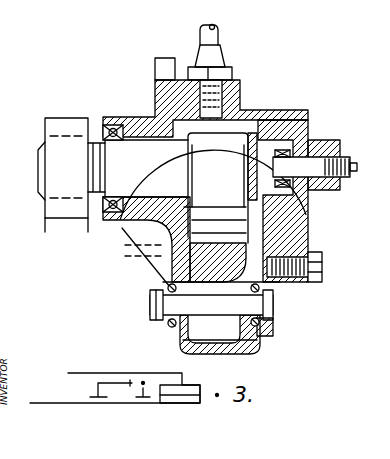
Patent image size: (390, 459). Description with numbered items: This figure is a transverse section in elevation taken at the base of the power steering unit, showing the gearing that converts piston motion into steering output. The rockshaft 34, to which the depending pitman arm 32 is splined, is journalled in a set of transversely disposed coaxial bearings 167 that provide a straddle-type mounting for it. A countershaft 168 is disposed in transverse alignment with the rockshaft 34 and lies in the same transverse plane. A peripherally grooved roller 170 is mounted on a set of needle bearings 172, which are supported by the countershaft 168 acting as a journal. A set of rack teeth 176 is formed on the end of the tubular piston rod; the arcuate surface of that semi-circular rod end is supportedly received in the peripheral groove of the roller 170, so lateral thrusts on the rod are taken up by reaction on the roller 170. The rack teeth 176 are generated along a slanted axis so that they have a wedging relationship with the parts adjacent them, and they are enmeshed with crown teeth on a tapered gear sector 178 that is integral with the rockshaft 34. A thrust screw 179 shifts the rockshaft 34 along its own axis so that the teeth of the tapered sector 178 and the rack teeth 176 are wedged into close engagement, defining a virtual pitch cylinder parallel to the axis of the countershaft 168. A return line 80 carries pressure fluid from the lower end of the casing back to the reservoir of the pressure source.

The pitman arm 32 is at (55, 229).
The rockshaft 34 is at (125, 147).
The return line 80 is at (213, 33).
The coaxial bearings 167 is at (270, 133).
The countershaft 168 is at (258, 303).
The peripherally grooved roller 170 is at (250, 337).
The needle bearings 172 is at (183, 338).
The rack teeth 176 is at (308, 200).
The tapered gear sector 178 is at (165, 260).
The thrust screw 179 is at (303, 170).